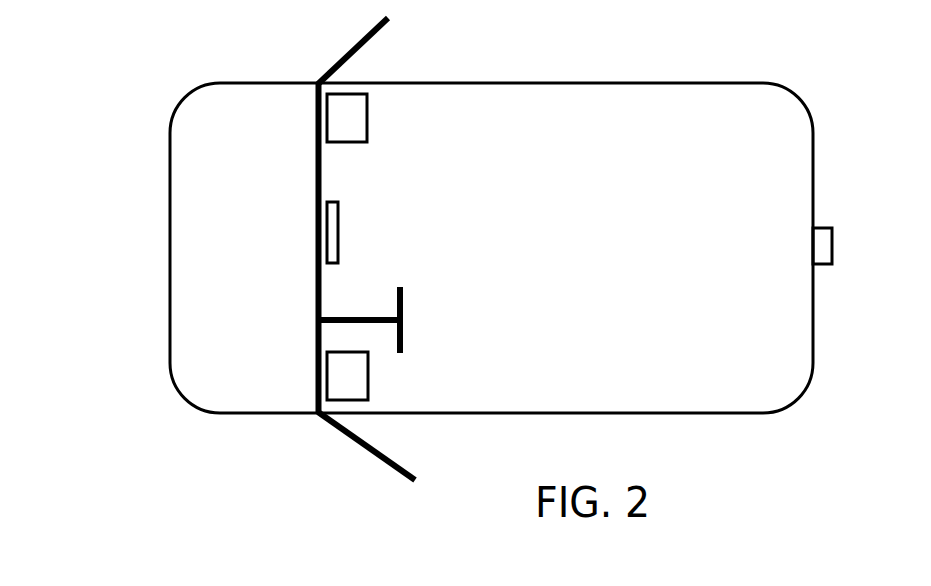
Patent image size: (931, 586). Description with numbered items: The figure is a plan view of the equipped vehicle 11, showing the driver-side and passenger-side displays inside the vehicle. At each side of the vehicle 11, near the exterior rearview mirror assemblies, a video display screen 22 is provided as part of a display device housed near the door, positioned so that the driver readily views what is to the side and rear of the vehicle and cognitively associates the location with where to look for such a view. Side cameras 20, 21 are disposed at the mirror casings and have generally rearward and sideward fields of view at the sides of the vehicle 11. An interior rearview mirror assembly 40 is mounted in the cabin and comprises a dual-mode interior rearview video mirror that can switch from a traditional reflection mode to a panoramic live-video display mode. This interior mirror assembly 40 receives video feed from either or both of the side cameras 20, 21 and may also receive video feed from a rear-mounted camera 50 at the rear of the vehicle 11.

The vehicle 11 is at (152, 250).
The camera 20 is at (407, 468).
The side camera 21 is at (380, 30).
The video display screen 22 is at (360, 128).
The interior rearview mirror assembly 40 is at (335, 228).
The rear-mounted camera 50 is at (817, 249).